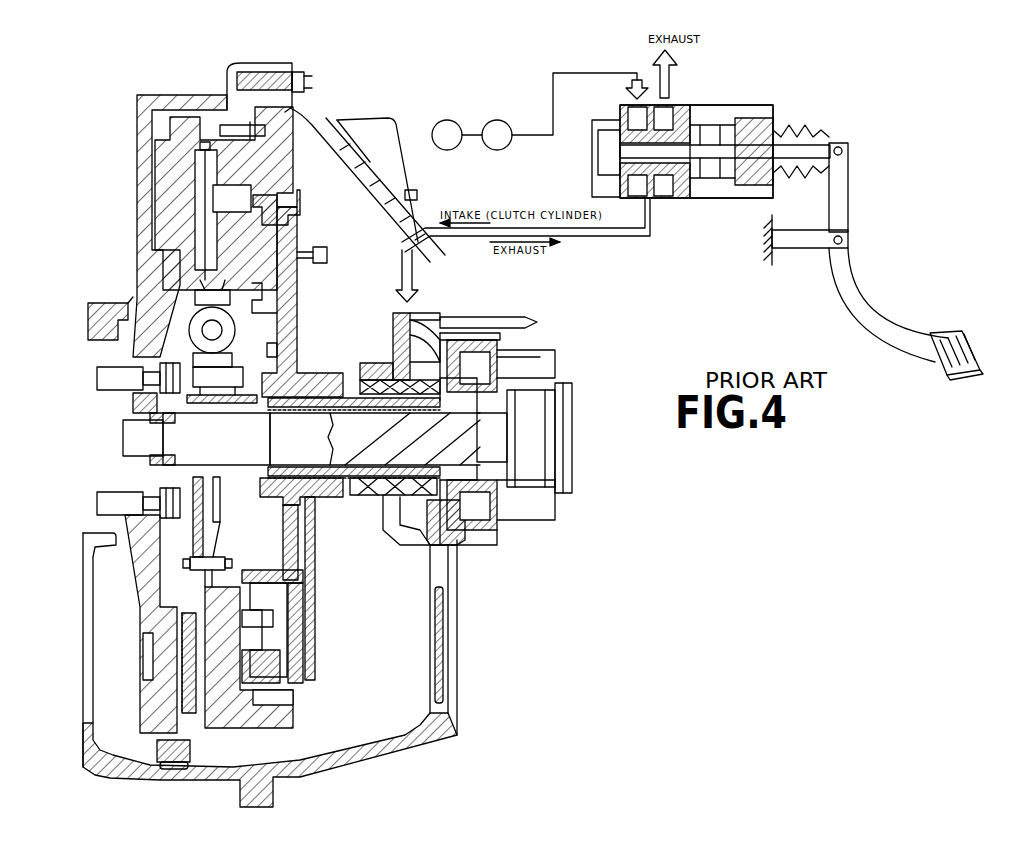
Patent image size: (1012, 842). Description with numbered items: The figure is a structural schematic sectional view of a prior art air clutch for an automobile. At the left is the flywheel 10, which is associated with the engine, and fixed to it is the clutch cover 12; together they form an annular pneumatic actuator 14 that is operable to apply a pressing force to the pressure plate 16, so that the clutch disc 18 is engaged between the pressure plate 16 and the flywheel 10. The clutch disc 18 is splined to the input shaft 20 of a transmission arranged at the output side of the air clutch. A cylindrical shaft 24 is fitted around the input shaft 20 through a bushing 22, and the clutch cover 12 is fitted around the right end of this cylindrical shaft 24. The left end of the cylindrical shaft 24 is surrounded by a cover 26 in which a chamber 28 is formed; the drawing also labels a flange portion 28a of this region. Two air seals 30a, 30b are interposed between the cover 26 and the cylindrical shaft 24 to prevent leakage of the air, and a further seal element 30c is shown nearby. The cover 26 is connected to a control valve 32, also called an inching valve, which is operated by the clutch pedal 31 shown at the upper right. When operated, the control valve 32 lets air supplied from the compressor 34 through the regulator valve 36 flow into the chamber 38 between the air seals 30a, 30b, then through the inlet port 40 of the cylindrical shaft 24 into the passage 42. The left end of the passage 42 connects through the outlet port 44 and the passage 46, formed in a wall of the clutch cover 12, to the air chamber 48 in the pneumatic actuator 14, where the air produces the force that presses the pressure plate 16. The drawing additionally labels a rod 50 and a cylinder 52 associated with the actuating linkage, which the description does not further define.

The flywheel 10 is at (173, 169).
The clutch cover 12 is at (290, 192).
The annular pneumatic actuator 14 is at (300, 208).
The pressure plate 16 is at (243, 208).
The clutch disc 18 is at (186, 289).
The input shaft 20 is at (415, 443).
The bushing 22 is at (515, 423).
The cylindrical shaft 24 is at (520, 472).
The cover 26 is at (398, 332).
The chamber 28 is at (400, 313).
The sleeve flange 28a is at (500, 335).
The air seal 30a is at (520, 353).
The air seal 30b is at (388, 352).
The bearing 30c is at (372, 374).
The clutch pedal 31 is at (968, 345).
The control valve 32 is at (760, 105).
The compressor 34 is at (446, 120).
The regulator valve 36 is at (497, 120).
The chamber 38 is at (386, 414).
The inlet port 40 is at (412, 466).
The passage 42 is at (343, 497).
The outlet port 44 is at (297, 470).
The passage 46 is at (305, 565).
The air chamber 48 is at (284, 598).
The piston rod 50 is at (482, 318).
The clutch cylinder 52 is at (597, 301).